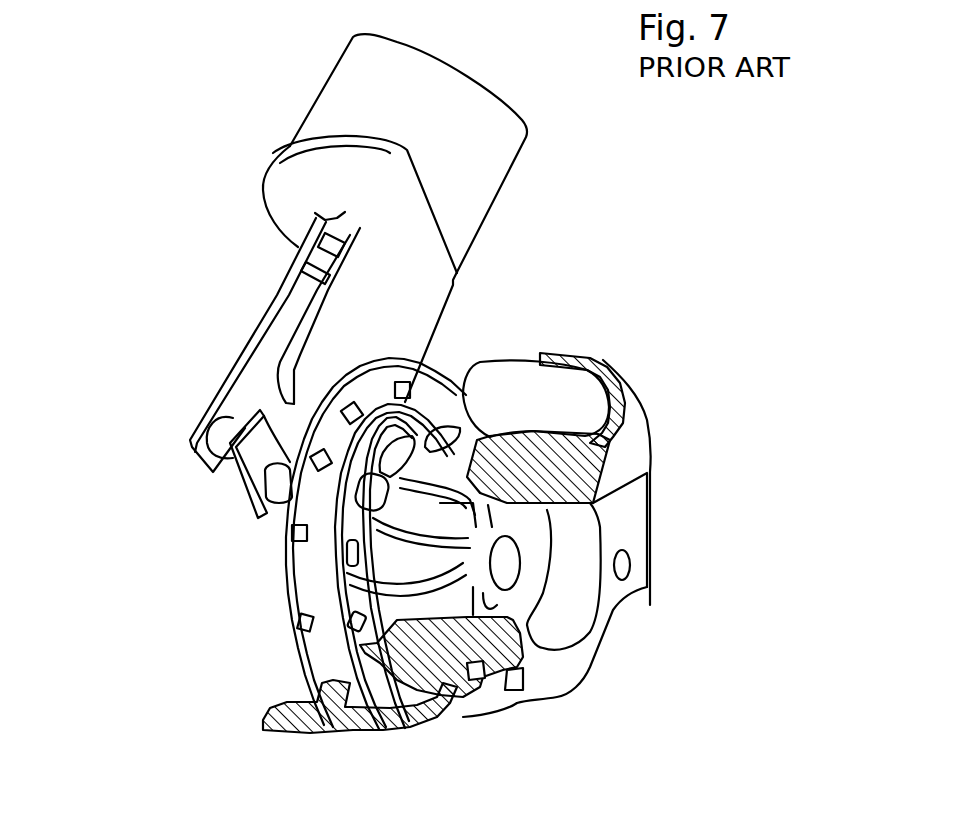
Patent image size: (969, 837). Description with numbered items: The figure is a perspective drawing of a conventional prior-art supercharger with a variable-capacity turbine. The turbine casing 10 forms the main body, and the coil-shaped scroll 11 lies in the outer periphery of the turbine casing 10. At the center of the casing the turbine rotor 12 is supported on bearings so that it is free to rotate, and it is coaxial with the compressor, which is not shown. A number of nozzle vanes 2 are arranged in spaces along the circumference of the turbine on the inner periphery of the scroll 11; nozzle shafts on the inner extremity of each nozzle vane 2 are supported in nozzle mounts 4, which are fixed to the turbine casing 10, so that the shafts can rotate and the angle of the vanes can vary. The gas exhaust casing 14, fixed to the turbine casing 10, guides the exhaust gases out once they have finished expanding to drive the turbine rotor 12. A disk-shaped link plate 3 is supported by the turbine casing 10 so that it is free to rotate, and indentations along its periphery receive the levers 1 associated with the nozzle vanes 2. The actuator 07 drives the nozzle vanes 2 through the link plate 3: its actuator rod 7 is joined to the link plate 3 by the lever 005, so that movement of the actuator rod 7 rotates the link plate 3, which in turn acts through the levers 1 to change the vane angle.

The actuator 07 is at (343, 95).
The actuator rod 7 is at (250, 398).
The lever 005 is at (258, 463).
The lever 1 is at (294, 527).
The link plate 3 is at (285, 587).
The nozzle mounts 4 is at (412, 408).
The nozzle vane 2 is at (450, 420).
The scroll 11 is at (562, 402).
The turbine casing 10 is at (623, 383).
The turbine rotor 12 is at (450, 528).
The gas exhaust casing 14 is at (593, 638).